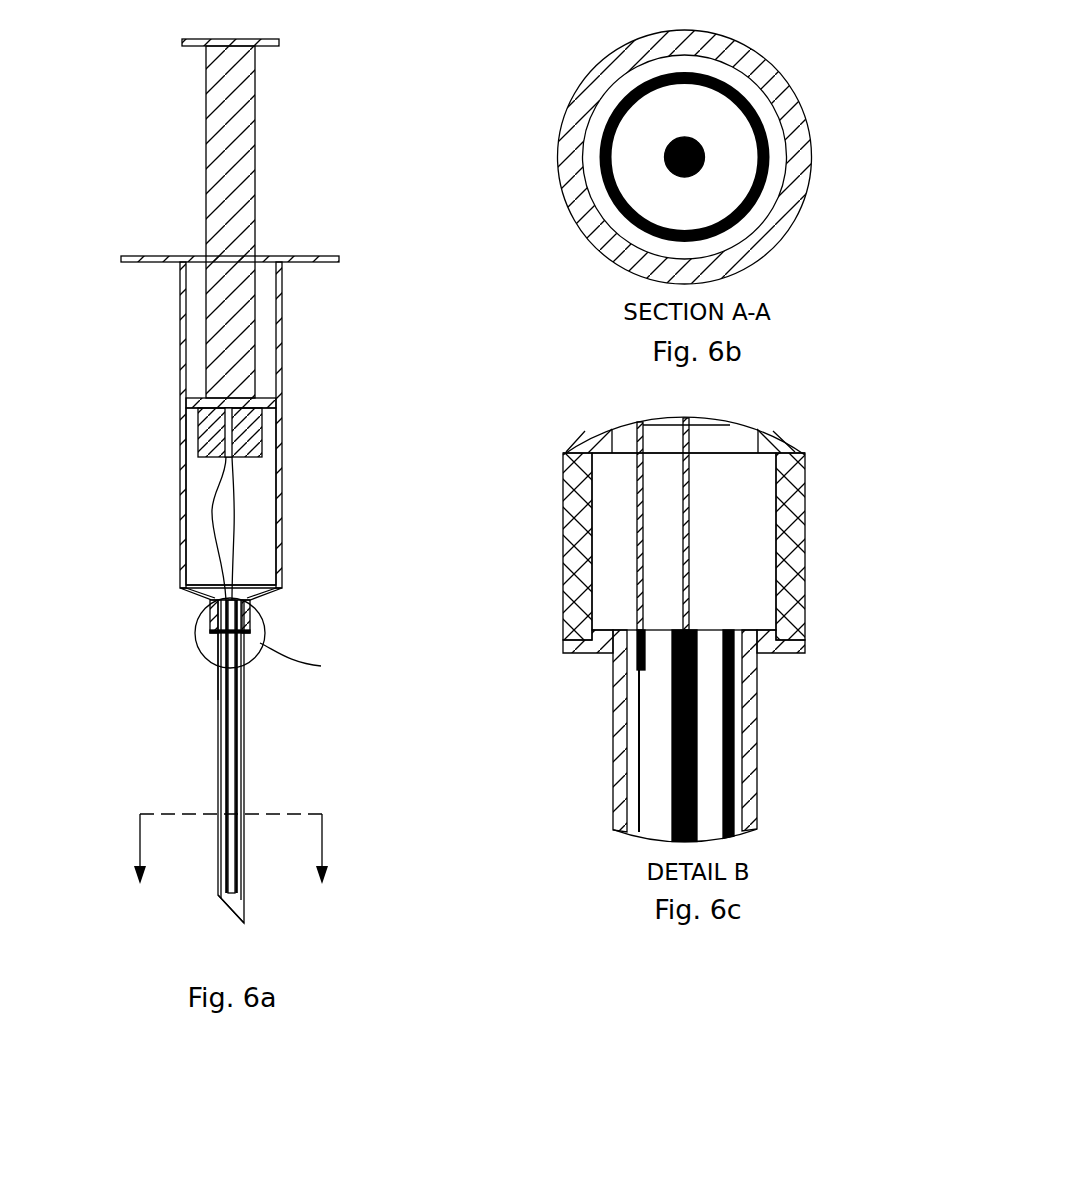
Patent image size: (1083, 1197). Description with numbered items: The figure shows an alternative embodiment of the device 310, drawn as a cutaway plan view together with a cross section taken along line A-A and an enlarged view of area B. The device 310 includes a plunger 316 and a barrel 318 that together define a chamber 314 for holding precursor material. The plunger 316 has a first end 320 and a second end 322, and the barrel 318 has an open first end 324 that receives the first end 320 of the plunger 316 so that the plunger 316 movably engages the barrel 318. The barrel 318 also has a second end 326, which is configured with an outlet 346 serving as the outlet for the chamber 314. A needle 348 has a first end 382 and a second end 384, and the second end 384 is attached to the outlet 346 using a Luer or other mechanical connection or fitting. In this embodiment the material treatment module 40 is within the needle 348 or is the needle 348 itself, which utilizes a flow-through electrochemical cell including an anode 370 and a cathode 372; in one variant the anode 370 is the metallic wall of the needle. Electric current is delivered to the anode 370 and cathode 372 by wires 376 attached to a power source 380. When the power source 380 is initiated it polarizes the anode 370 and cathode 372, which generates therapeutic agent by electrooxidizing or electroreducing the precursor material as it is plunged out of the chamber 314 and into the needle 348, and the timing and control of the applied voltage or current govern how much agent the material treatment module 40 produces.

In FIG. 6a, the device 310 is at (158, 190).
In FIG. 6a, the second end of the plunger 322 is at (238, 82).
In FIG. 6a, the plunger 316 is at (238, 164).
In FIG. 6a, the first end of the barrel 324 is at (282, 292).
In FIG. 6a, the barrel 318 is at (282, 363).
In FIG. 6a, the first end of the plunger 320 is at (203, 373).
In FIG. 6a, the power source 380 is at (237, 428).
In FIG. 6a, the wires 376 is at (237, 488).
In FIG. 6c, the wires 376 is at (683, 520).
In FIG. 6a, the chamber 314 is at (260, 532).
In FIG. 6a, the second end of the barrel 326 is at (282, 580).
In FIG. 6a, the outlet 346 is at (247, 615).
In FIG. 6c, the outlet 346 is at (800, 530).
In FIG. 6a, the second end of the needle 384 is at (218, 673).
In FIG. 6a, the material treatment module 40 is at (255, 727).
In FIG. 6a, the needle 348 is at (246, 757).
In FIG. 6b, the needle 348 is at (760, 67).
In FIG. 6c, the needle 348 is at (750, 683).
In FIG. 6a, the anode 370 is at (245, 788).
In FIG. 6b, the anode 370 is at (605, 122).
In FIG. 6c, the anode 370 is at (732, 742).
In FIG. 6a, the cathode 372 is at (243, 890).
In FIG. 6b, the cathode 372 is at (702, 167).
In FIG. 6c, the cathode 372 is at (672, 818).
In FIG. 6a, the first end of the needle 382 is at (222, 904).